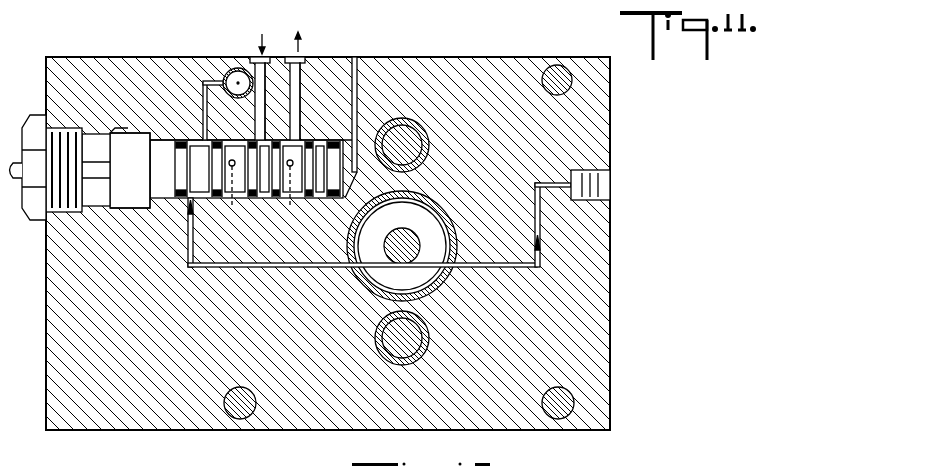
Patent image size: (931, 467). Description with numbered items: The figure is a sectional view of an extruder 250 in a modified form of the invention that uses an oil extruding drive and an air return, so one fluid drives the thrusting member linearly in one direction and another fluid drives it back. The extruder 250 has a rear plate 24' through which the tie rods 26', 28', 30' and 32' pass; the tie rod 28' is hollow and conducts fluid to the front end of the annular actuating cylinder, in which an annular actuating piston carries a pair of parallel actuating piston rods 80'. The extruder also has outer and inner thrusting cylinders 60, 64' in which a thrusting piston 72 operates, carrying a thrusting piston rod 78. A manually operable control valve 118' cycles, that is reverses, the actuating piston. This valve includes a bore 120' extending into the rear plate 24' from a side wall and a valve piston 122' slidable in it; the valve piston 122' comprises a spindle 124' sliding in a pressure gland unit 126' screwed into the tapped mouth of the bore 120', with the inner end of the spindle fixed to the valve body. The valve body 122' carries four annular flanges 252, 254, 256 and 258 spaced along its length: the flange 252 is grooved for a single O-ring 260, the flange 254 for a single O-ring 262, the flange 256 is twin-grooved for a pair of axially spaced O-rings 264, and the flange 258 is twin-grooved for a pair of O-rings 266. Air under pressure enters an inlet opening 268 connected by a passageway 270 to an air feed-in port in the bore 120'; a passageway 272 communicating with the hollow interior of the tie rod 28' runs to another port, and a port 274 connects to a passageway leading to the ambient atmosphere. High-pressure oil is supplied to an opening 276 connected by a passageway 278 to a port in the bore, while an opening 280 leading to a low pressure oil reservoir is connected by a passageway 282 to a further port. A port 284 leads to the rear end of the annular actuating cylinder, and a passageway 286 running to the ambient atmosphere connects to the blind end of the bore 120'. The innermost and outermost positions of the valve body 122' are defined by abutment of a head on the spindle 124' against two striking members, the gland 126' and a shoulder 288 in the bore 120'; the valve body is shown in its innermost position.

The extruder 250 is at (105, 432).
The rear plate 24' is at (632, 320).
The tie rod 26' is at (557, 62).
The tie rod 30' is at (542, 399).
The tie rod 32' is at (226, 399).
The actuating piston rods 80' is at (425, 238).
The outer thrusting cylinder 60 is at (440, 208).
The inner thrusting cylinder 64' is at (419, 246).
The thrusting piston rod 78 is at (383, 245).
The thrusting piston 72 is at (420, 246).
The hollow tie rod 28' is at (228, 66).
The valve piston 122' is at (241, 143).
The passageway 286 is at (356, 58).
The bore 120' is at (145, 182).
The shoulder 288 is at (140, 130).
The spindle 124' is at (94, 189).
The pressure gland unit 126' is at (67, 153).
The manually operable control valve 118' is at (27, 188).
The passageway 272 is at (203, 86).
The opening 276 is at (256, 56).
The opening 280 is at (305, 58).
The passageway 282 is at (300, 100).
The passageway 278 is at (265, 115).
The annular flange 252 is at (178, 140).
The annular flange 254 is at (222, 140).
The annular flange 256 is at (270, 140).
The annular flange 258 is at (318, 140).
The O-ring 262 is at (198, 200).
The port 274 is at (232, 206).
The O-rings 264 is at (258, 200).
The port 284 is at (290, 206).
The O-rings 266 is at (313, 200).
The O-ring 260 is at (185, 215).
The passageway 270 is at (527, 268).
The inlet opening 268 is at (612, 186).